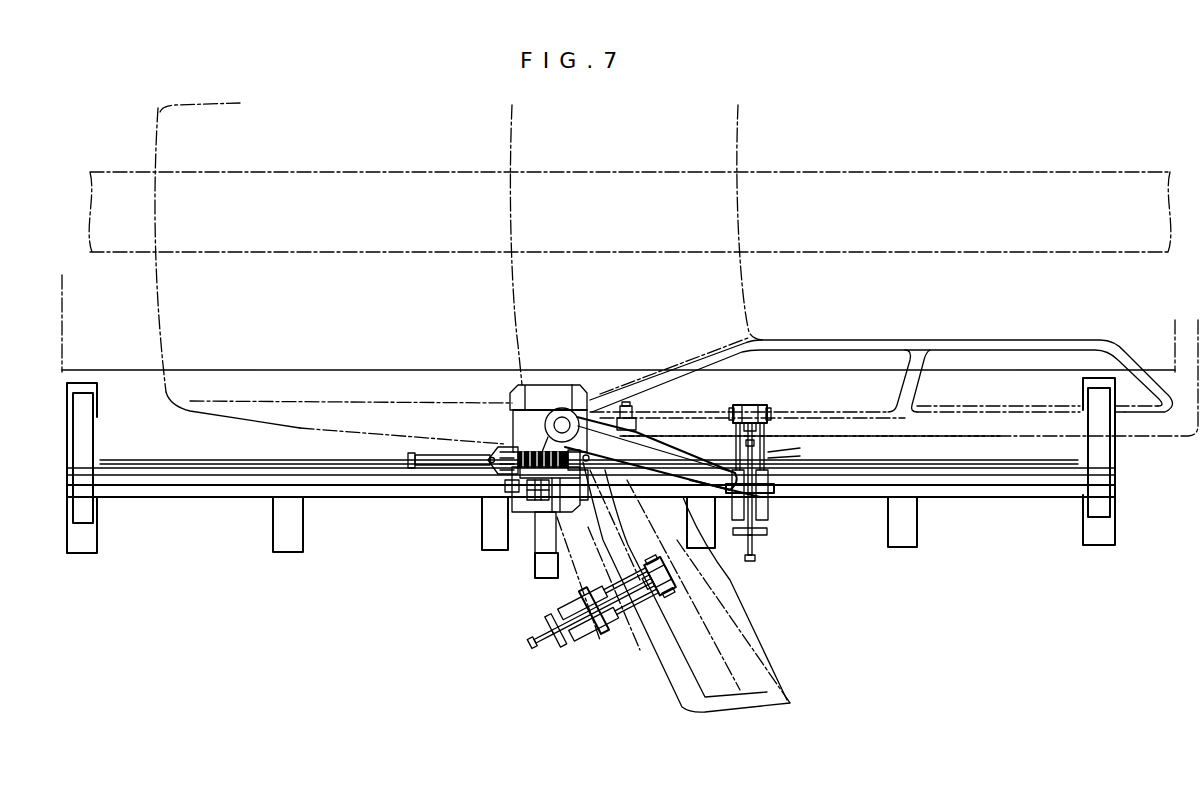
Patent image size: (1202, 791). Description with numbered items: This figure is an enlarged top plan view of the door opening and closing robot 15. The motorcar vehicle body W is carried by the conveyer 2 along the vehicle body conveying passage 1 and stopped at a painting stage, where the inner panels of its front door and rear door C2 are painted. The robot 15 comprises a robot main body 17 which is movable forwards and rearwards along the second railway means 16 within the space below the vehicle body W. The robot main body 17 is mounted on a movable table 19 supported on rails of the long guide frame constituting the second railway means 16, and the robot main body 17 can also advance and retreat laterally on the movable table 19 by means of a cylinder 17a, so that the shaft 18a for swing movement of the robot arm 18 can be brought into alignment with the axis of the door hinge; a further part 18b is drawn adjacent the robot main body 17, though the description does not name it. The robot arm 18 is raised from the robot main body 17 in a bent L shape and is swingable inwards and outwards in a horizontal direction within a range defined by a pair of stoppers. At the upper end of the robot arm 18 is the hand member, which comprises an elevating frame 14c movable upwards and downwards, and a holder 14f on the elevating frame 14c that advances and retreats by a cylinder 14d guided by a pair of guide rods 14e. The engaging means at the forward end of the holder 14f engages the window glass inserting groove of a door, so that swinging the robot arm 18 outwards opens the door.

The vehicle body conveying passage 1 is at (110, 140).
The conveyer 2 is at (110, 372).
The motorcar vehicle body W is at (160, 292).
The elevating frame 14c is at (772, 494).
The cylinder 14d is at (760, 545).
The guide rods 14e is at (770, 458).
The holder 14f is at (756, 408).
The door opening and closing robot 15 is at (714, 450).
The second railway means 16 is at (338, 487).
The robot main body 17 is at (514, 415).
The cylinder 17a is at (540, 567).
The robot arm 18 is at (682, 455).
The shaft 18a is at (562, 410).
The spring rod 18b is at (432, 468).
The movable table 19 is at (512, 502).
The rear door C2 is at (966, 410).